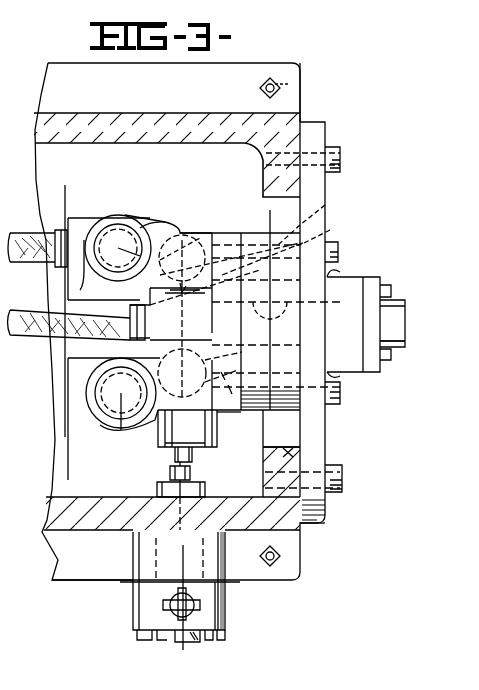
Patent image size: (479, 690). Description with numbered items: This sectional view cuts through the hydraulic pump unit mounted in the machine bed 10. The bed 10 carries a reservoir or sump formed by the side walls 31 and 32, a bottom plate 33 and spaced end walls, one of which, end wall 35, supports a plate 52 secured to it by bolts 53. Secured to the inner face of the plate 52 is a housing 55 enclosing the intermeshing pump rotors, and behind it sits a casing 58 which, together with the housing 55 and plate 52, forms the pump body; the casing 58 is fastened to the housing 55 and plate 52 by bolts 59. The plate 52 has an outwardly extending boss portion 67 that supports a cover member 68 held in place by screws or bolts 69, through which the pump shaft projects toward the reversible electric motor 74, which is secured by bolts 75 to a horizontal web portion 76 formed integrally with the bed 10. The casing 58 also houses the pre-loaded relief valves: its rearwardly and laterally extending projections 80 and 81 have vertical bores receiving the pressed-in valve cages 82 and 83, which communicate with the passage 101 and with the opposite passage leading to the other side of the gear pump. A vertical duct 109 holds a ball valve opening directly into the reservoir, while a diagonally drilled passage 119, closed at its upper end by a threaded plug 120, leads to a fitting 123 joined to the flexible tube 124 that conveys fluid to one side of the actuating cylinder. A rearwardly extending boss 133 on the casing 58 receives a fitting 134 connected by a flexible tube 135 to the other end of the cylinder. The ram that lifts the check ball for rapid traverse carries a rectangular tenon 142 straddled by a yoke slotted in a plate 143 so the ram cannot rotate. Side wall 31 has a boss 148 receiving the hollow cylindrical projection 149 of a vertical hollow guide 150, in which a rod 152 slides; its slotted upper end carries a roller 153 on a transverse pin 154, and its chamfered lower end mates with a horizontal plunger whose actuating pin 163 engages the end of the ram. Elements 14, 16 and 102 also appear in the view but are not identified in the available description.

The bed 10 is at (7, 644).
The frame member 14 is at (0, 392).
The frame member 16 is at (0, 370).
The side wall 31 is at (88, 530).
The side wall 32 is at (190, 115).
The bottom plate 33 is at (29, 686).
The end wall 35 is at (290, 183).
The plate 52 is at (330, 520).
The bolts 53 is at (345, 153).
The housing 55 is at (325, 220).
The casing 58 is at (222, 420).
The bolts 59 is at (340, 252).
The boss portion 67 is at (357, 277).
The cover member 68 is at (375, 365).
The screws or bolts 69 is at (392, 291).
The reversible electric motor 74 is at (0, 602).
The bolts 75 is at (0, 575).
The horizontal web portion 76 is at (0, 548).
The projection 80 is at (132, 216).
The projection 81 is at (133, 438).
The valve cage 82 is at (148, 222).
The valve cage 83 is at (102, 422).
The passage 101 is at (241, 245).
The bore 102 is at (178, 237).
The vertical duct 109 is at (140, 390).
The drilled passage 119 is at (333, 228).
The threaded plug 120 is at (200, 258).
The fitting 123 is at (185, 245).
The flexible tube 124 is at (77, 340).
The boss 133 is at (80, 218).
The fitting 134 is at (50, 270).
The flexible tube 135 is at (28, 232).
The rectangular tenon 142 is at (170, 462).
The plate 143 is at (195, 455).
The boss 148 is at (230, 566).
The hollow cylindrical projection 149 is at (205, 489).
The hollow guide 150 is at (225, 613).
The rod 152 is at (163, 607).
The roller 153 is at (172, 640).
The transverse pin 154 is at (226, 634).
The actuating pin 163 is at (195, 473).